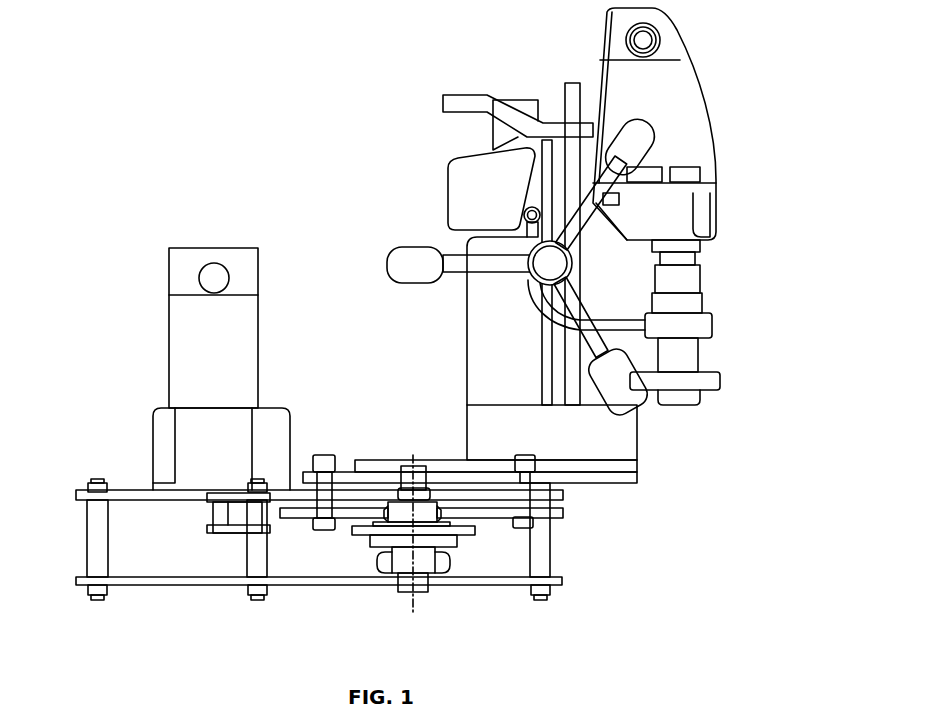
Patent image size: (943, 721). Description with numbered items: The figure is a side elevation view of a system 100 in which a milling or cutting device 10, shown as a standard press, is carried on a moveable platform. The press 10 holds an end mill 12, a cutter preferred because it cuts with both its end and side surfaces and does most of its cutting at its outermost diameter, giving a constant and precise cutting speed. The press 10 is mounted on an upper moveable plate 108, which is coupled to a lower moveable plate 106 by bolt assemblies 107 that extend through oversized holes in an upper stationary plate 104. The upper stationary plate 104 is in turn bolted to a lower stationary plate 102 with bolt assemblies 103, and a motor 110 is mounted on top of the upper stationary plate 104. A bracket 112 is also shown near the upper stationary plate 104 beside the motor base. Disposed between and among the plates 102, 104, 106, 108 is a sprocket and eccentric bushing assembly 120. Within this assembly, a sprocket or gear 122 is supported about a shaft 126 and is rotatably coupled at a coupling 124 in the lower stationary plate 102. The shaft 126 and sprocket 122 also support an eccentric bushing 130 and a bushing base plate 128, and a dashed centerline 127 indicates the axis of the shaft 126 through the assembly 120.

The milling or cutting device 10 is at (574, 50).
The end mill 12 is at (700, 393).
The system 100 is at (280, 96).
The lower stationary plate 102 is at (183, 587).
The bolt assemblies 103 is at (95, 550).
The upper stationary plate 104 is at (133, 491).
The lower moveable plate 106 is at (477, 503).
The bolt assemblies 107 is at (537, 522).
The upper moveable plate 108 is at (627, 480).
The motor 110 is at (214, 263).
The bracket 112 is at (240, 518).
The sprocket and eccentric bushing assembly 120 is at (352, 550).
The sprocket or gear 122 is at (393, 512).
The coupling 124 is at (405, 558).
The shaft 126 is at (413, 470).
The pivot axis 127 is at (418, 605).
The bushing base plate 128 is at (447, 518).
The eccentric bushing 130 is at (417, 500).